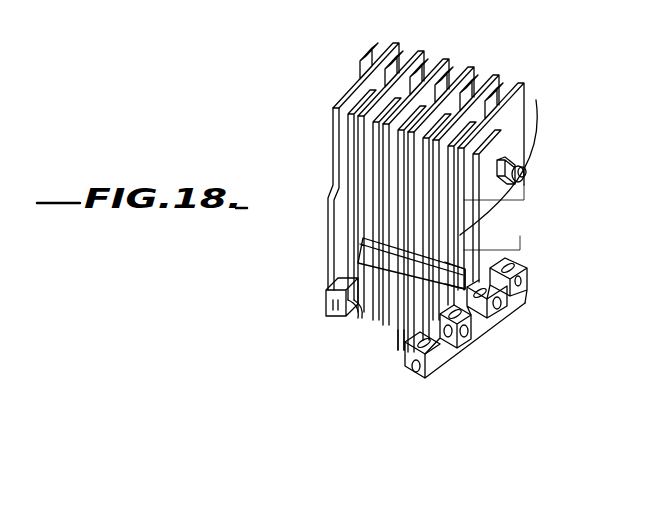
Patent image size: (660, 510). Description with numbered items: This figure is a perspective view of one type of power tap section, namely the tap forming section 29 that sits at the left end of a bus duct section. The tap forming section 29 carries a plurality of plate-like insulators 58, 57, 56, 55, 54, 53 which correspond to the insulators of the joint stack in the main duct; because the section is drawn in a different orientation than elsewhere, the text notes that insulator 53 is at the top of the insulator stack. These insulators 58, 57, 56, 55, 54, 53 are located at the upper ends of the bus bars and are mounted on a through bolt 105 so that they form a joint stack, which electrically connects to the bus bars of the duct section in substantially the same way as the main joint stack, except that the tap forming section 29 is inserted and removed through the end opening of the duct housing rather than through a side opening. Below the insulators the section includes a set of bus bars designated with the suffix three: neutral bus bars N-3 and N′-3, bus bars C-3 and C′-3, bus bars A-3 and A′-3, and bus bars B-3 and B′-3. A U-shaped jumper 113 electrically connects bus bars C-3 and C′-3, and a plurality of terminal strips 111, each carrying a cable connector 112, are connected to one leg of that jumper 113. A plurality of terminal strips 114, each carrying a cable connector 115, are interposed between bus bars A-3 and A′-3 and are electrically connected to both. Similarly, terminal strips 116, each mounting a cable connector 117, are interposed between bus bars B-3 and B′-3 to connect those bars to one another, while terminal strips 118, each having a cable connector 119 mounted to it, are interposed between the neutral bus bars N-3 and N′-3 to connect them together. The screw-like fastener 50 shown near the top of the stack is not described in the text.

The plate-like insulator 58 is at (338, 162).
The plate-like insulator 57 is at (376, 173).
The plate-like insulator 56 is at (411, 205).
The plate-like insulator 55 is at (447, 222).
The plate-like insulator 54 is at (500, 84).
The plate-like insulator 53 is at (516, 186).
The screw 50 is at (520, 158).
The tap forming section 29 is at (560, 171).
The through bolt 105 is at (507, 192).
The terminal strip 111 is at (506, 259).
The cable connector 112 is at (530, 297).
The U-shaped jumper 113 is at (392, 272).
The terminal strip 114 is at (443, 280).
The cable connector 115 is at (466, 340).
The terminal strip 116 is at (397, 350).
The cable connector 117 is at (430, 372).
The terminal strip 118 is at (358, 318).
The cable connector 119 is at (327, 305).
The neutral bus bar N′-3 is at (343, 215).
The neutral bus bar N-3 is at (352, 235).
The bus bar C-3 is at (368, 248).
The bus bar C′-3 is at (505, 215).
The bus bar A-3 is at (498, 243).
The bus bar A′-3 is at (418, 246).
The bus bar B-3 is at (403, 372).
The bus bar B′-3 is at (395, 331).